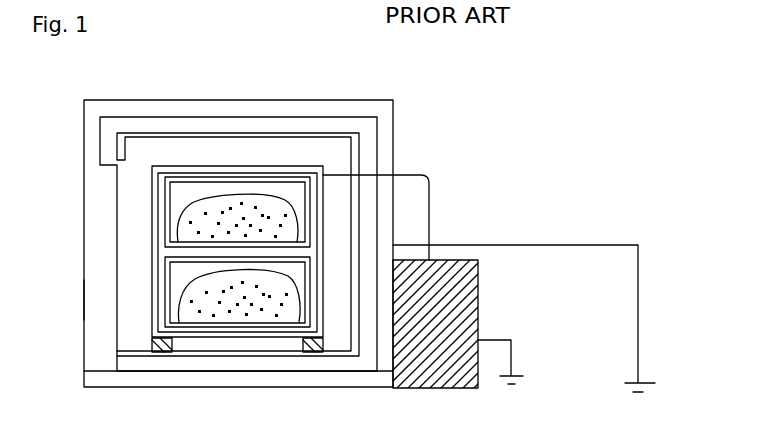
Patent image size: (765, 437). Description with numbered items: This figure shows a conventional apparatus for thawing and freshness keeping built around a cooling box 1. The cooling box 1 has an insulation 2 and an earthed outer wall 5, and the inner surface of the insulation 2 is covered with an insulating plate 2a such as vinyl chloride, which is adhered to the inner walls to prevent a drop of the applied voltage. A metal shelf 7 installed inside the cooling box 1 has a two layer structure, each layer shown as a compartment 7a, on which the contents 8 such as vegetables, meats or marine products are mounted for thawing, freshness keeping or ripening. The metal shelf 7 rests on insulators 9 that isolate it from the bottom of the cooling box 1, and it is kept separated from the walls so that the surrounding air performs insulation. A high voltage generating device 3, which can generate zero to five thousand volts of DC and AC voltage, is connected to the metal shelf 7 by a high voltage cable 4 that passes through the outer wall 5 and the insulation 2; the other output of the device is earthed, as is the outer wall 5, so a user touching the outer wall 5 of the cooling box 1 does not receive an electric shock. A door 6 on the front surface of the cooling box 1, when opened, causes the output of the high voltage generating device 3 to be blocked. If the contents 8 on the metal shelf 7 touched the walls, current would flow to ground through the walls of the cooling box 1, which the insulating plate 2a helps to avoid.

The cooling box 1 is at (245, 100).
The insulation 2 is at (372, 138).
The insulating plate 2a is at (165, 137).
The high voltage generating device 3 is at (478, 322).
The high voltage cable 4 is at (429, 212).
The outer wall 5 is at (337, 382).
The door 6 is at (93, 302).
The metal shelf 7 is at (160, 186).
The cell 7a is at (186, 262).
The contents 8 is at (190, 213).
The insulators 9 is at (168, 353).